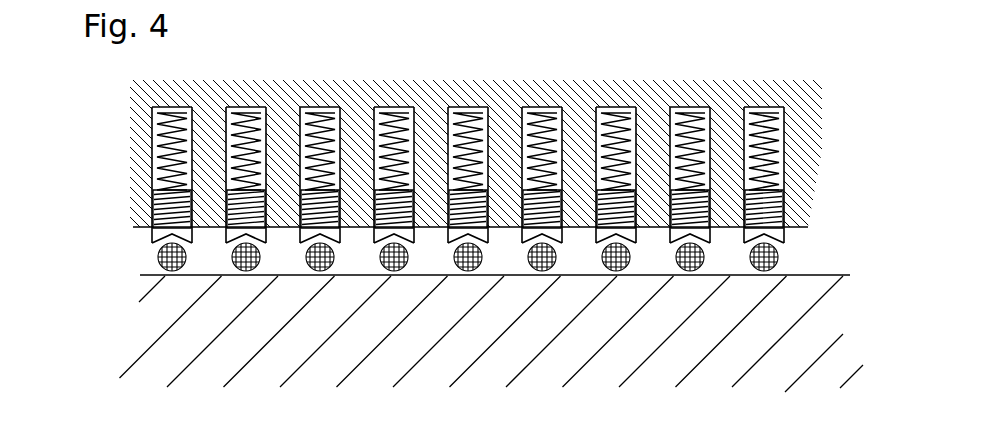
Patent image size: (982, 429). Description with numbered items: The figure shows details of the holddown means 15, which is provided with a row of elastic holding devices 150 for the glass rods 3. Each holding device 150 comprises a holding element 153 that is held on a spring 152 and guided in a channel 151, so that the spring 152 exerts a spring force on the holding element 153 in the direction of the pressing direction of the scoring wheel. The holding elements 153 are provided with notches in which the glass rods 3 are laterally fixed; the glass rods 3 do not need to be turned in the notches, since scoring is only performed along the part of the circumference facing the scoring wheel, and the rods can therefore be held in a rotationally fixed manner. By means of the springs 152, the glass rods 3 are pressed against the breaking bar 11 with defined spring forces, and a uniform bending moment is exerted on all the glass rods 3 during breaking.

The holddown means 15 is at (133, 104).
The elastic holding device 150 is at (200, 123).
The channel 151 is at (153, 178).
The spring 152 is at (191, 109).
The holding element 153 is at (155, 223).
The glass rod 3 is at (155, 263).
The breaking bar 11 is at (173, 322).